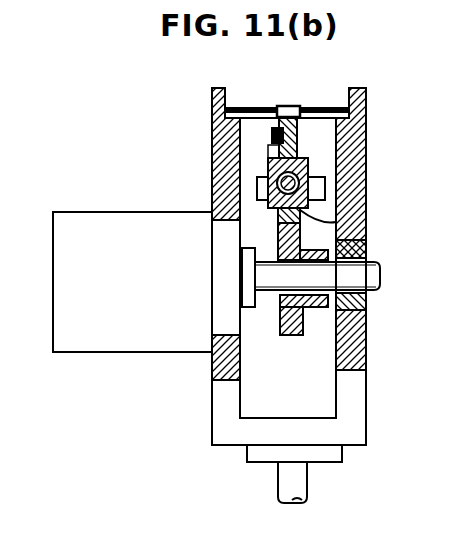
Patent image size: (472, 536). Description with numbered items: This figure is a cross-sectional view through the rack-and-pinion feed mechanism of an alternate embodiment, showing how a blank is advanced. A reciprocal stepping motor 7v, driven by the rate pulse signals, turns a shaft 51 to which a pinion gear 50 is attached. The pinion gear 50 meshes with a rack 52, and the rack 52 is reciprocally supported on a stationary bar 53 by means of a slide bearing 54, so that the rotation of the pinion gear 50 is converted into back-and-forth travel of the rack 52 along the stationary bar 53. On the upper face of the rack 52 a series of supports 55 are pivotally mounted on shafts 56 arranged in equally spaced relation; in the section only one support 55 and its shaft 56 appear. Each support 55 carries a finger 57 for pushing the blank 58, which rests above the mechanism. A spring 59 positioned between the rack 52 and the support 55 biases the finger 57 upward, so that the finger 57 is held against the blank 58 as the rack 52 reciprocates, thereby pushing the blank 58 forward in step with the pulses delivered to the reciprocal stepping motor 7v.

The reciprocal stepping motor 7v is at (128, 340).
The pinion gear 50 is at (290, 337).
The shaft 51 is at (366, 270).
The rack 52 is at (336, 222).
The stationary bar 53 is at (302, 184).
The slide bearing 54 is at (262, 188).
The support 55 is at (300, 155).
The shaft 56 is at (300, 143).
The finger 57 is at (286, 106).
The blank 58 is at (318, 108).
The spring 59 is at (268, 150).